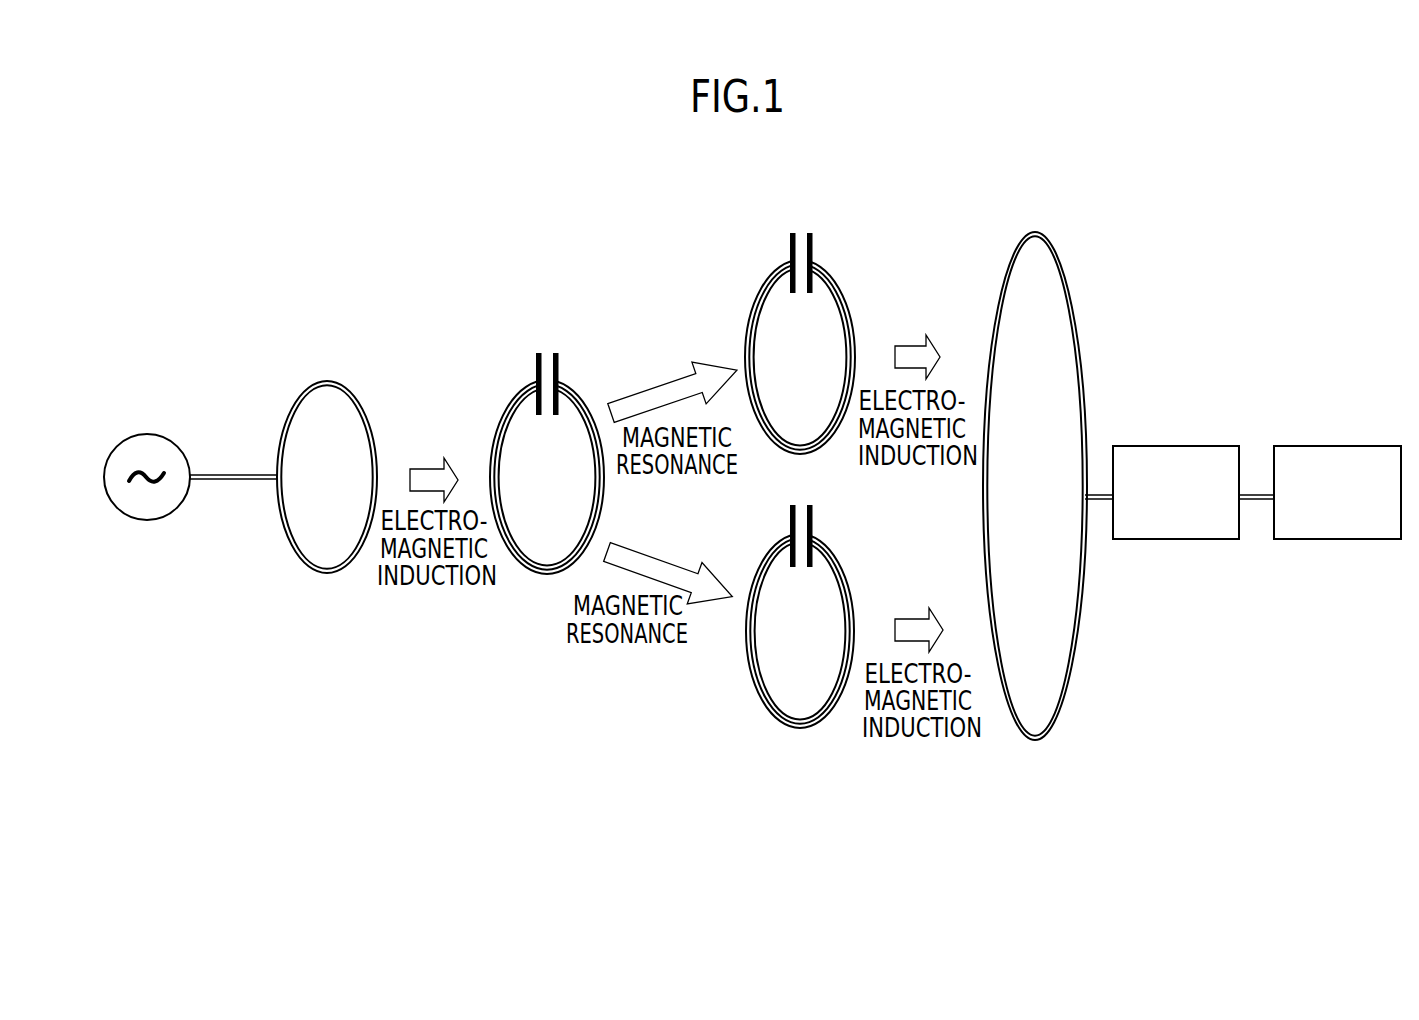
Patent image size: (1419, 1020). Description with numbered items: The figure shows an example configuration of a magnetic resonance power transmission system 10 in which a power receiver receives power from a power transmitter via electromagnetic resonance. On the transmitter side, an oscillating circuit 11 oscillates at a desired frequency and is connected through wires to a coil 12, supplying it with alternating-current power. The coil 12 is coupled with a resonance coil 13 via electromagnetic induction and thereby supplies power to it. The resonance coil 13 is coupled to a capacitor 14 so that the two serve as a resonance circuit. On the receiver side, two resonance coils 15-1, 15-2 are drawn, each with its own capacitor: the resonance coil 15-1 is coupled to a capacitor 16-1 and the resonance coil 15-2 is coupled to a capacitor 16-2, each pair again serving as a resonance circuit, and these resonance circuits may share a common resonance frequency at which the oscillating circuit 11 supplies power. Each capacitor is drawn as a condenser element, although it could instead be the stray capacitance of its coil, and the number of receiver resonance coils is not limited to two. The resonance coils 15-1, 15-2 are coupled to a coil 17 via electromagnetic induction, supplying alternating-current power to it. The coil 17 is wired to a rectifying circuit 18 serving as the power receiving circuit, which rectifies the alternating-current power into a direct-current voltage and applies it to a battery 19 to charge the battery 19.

The magnetic resonance power transmission system 10 is at (711, 211).
The oscillating circuit 11 is at (178, 449).
The coil 12 is at (358, 401).
The resonance coil 13 is at (584, 399).
The capacitor 14 is at (560, 358).
The resonance coil 15-1 is at (850, 311).
The resonance coil 15-2 is at (850, 586).
The capacitor 16-1 is at (814, 244).
The capacitor 16-2 is at (814, 520).
The coil 17 is at (1076, 320).
The rectifying circuit 18 is at (1180, 446).
The battery 19 is at (1346, 446).